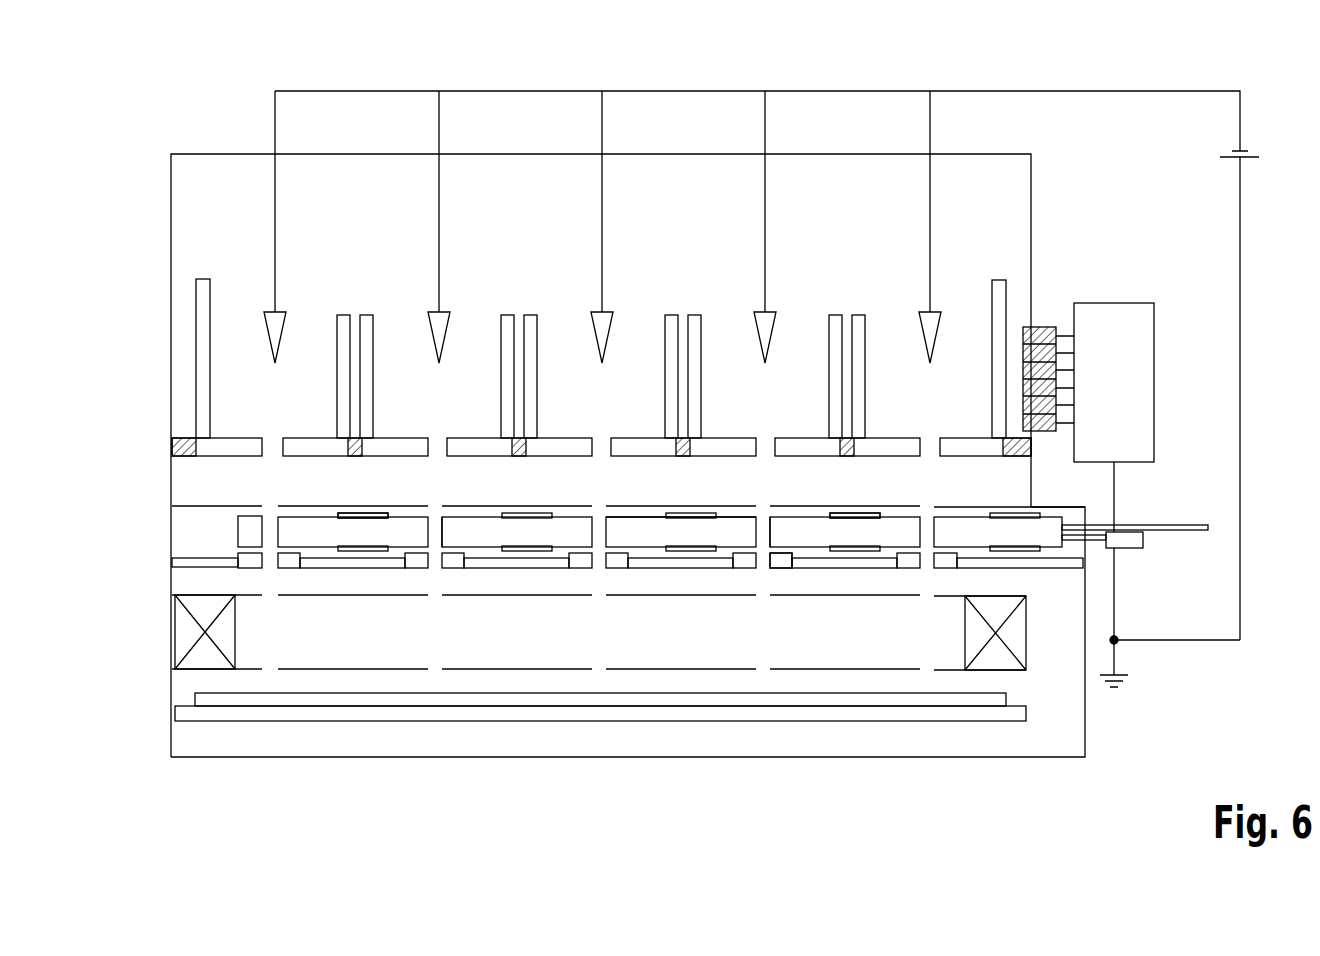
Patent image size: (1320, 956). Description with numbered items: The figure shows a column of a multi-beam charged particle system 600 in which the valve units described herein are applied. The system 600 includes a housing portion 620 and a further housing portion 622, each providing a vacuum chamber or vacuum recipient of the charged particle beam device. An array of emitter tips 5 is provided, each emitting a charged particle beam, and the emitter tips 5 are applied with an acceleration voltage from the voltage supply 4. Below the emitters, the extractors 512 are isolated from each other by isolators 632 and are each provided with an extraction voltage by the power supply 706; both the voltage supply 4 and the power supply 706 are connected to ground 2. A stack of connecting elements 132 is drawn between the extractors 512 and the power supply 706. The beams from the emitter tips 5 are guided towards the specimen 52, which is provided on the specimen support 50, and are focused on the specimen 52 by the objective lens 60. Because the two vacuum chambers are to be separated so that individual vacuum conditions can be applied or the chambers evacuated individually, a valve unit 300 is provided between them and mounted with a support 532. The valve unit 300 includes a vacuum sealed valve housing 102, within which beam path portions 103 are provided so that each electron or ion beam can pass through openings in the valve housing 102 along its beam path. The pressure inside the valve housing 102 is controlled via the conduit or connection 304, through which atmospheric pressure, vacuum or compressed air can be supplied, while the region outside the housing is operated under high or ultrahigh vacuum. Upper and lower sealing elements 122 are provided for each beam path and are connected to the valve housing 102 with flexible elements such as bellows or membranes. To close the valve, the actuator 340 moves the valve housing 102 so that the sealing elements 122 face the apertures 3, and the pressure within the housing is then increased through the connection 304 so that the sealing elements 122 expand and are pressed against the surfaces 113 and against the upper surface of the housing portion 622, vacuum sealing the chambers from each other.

The system 600 is at (1043, 90).
The voltage supply 4 is at (1228, 160).
The housing portion 620 is at (1031, 212).
The further housing portion 622 is at (1072, 742).
The emitter tips 5 is at (268, 320).
The extractors 512 is at (234, 442).
The isolators 632 is at (172, 447).
The connector stack 132 is at (1040, 327).
The power supply 706 is at (1133, 368).
The ground 2 is at (1130, 678).
The valve unit 300 is at (215, 535).
The apertures 3 is at (430, 505).
The support 532 is at (197, 568).
The surfaces 113 is at (782, 563).
The sealing elements 122 is at (364, 518).
The beam path portions 103 is at (435, 536).
The valve housing 102 is at (730, 535).
The conduit or connection 304 is at (1185, 525).
The actuator 340 is at (1130, 548).
The objective lens 60 is at (178, 668).
The specimen support 50 is at (548, 713).
The specimen 52 is at (628, 700).